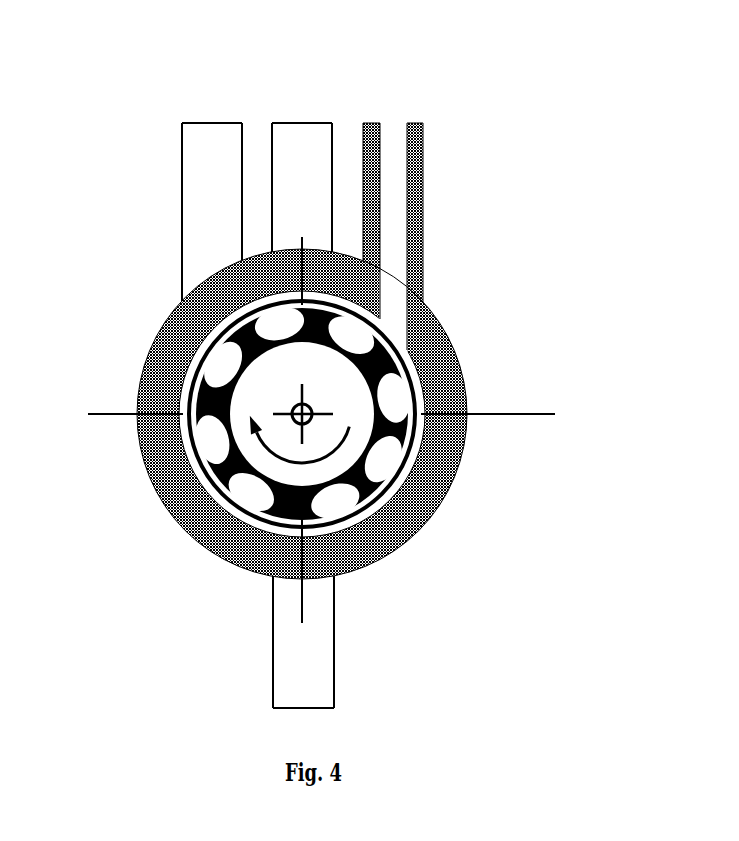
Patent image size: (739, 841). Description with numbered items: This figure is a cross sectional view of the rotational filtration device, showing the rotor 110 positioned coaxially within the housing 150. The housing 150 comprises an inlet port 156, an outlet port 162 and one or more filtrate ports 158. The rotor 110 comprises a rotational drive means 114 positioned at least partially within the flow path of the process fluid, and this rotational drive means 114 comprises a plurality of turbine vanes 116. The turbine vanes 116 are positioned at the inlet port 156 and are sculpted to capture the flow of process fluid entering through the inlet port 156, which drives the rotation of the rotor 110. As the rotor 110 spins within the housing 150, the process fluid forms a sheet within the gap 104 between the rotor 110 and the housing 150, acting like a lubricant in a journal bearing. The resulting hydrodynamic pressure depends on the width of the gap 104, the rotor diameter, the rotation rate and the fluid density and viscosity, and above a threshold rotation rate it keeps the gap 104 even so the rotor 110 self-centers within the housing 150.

The gap 104 is at (412, 367).
The rotor 110 is at (383, 435).
The rotational drive means 114 is at (253, 404).
The turbine vanes 116 is at (407, 540).
The housing 150 is at (152, 467).
The inlet port 156 is at (398, 222).
The filtrate ports 158 is at (290, 152).
The outlet port 162 is at (190, 211).